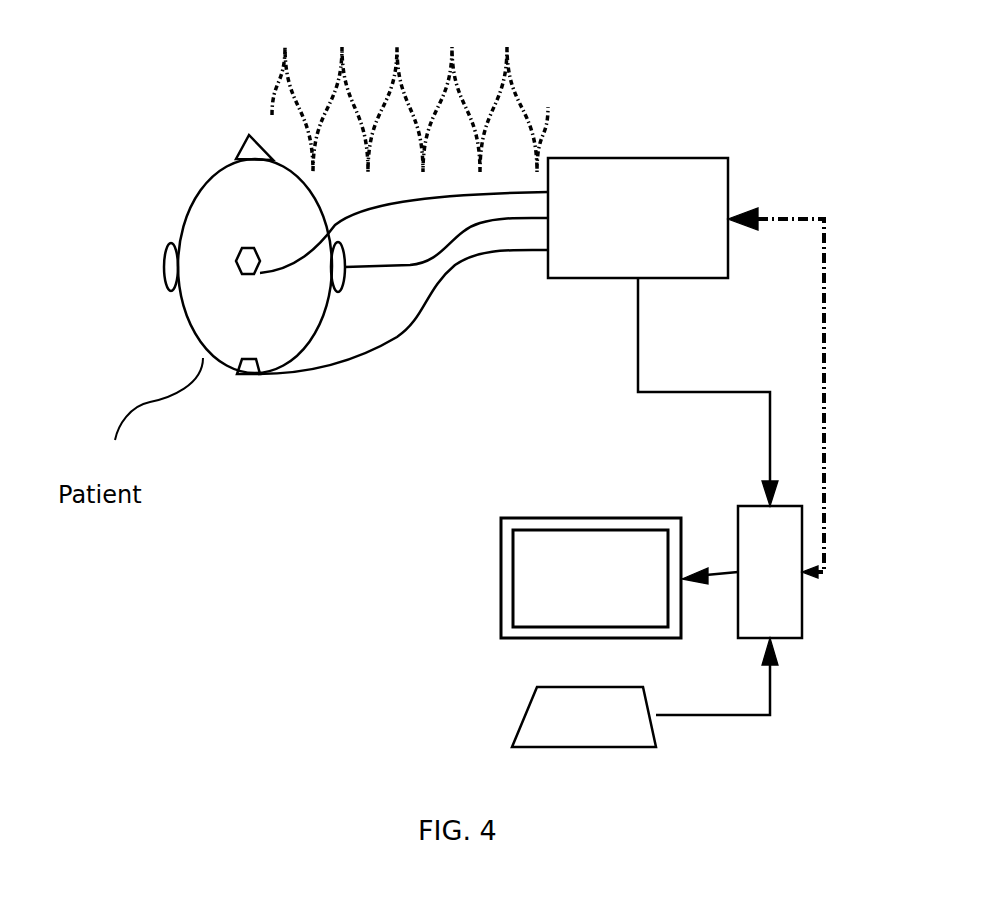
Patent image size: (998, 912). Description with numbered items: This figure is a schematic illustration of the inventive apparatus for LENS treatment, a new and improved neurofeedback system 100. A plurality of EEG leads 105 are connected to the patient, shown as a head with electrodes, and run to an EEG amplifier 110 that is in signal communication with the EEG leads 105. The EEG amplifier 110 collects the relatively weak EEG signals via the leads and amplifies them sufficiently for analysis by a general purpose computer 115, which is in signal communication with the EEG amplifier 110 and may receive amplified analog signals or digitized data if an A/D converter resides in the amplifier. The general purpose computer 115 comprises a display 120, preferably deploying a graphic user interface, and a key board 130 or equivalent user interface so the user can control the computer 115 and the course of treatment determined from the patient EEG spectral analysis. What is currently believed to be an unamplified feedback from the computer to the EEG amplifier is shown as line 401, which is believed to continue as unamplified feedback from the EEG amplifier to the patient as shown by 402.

The neurofeedback system 100 is at (833, 142).
The EEG leads 105 is at (423, 310).
The EEG amplifier 110 is at (634, 245).
The general purpose computer 115 is at (815, 578).
The display 120 is at (501, 578).
The key board 130 is at (583, 748).
The unamplified feedback line 401 is at (845, 440).
The unamplified feedback to patient 402 is at (548, 110).